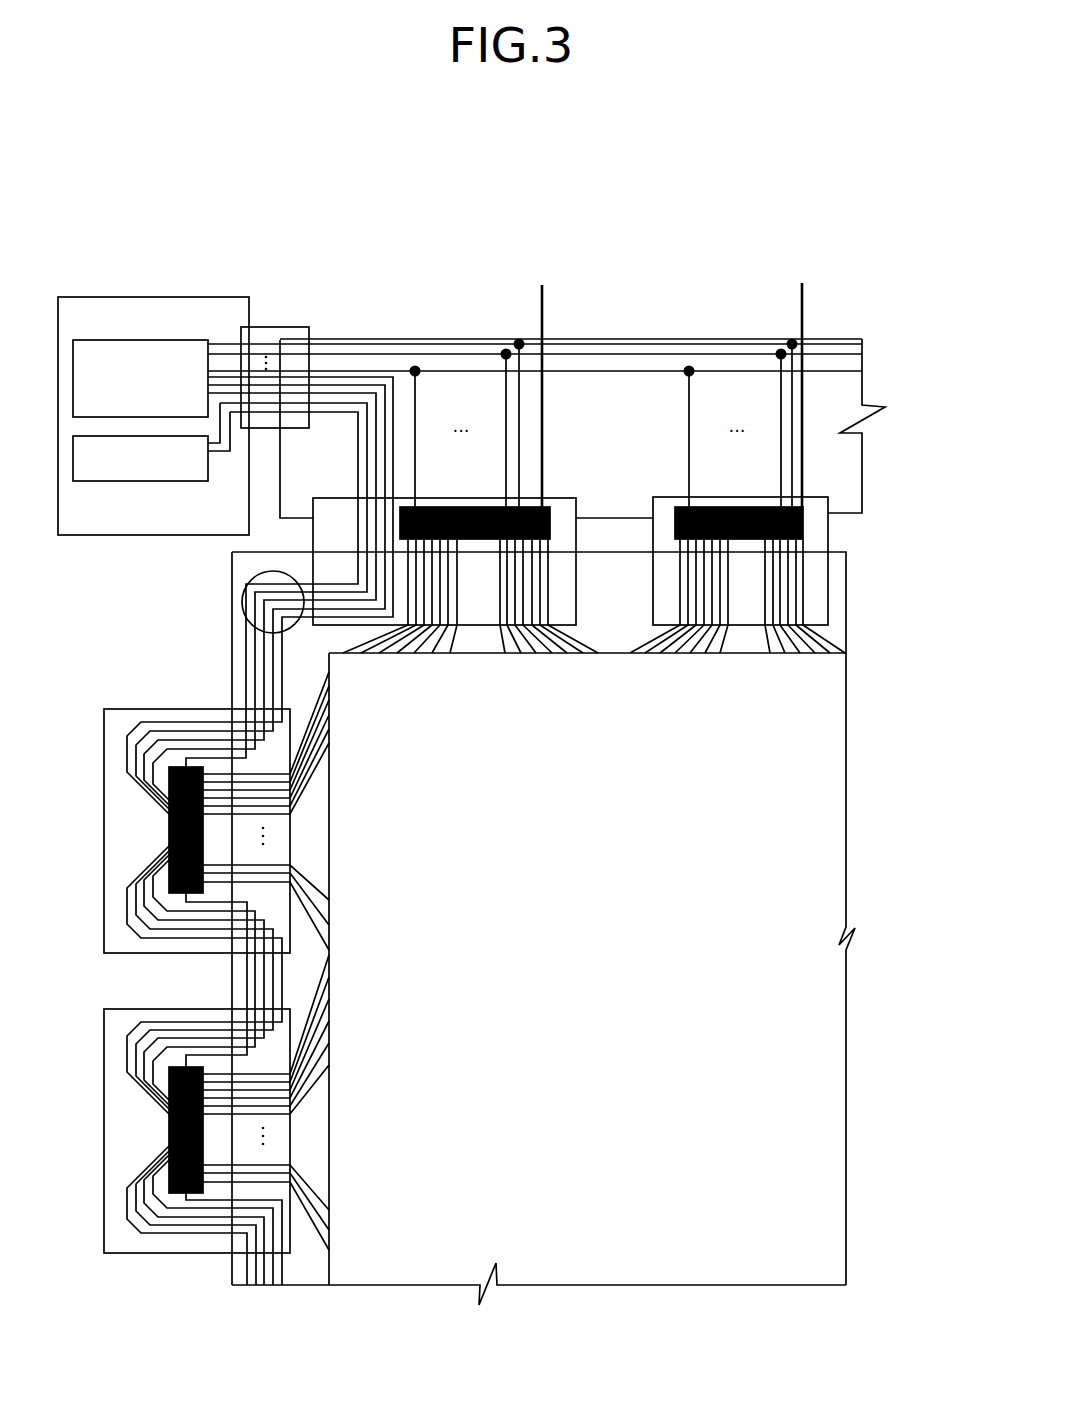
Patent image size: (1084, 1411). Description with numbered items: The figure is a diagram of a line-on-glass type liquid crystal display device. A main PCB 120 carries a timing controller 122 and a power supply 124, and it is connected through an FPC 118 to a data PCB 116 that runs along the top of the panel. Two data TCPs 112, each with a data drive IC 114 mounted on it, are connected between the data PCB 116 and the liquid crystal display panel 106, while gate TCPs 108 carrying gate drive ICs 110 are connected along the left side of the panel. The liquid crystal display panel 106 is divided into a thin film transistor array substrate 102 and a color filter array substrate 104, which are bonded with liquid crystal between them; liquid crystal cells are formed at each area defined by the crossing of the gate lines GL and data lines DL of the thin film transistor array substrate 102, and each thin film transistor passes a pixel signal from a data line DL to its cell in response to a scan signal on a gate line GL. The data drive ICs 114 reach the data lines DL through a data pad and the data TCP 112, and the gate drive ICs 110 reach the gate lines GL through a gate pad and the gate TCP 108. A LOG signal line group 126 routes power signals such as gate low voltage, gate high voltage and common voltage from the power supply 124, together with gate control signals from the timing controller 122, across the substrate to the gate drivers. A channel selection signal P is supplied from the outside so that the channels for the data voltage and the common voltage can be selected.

The thin film transistor array substrate 102 is at (837, 606).
The color filter array substrate 104 is at (835, 685).
The liquid crystal display panel 106 is at (912, 601).
The gate TCP 108 is at (184, 708).
The gate drive IC 110 is at (168, 828).
The data TCP 112 is at (862, 512).
The data drive IC 114 is at (803, 530).
The data PCB 116 is at (720, 338).
The FPC 118 is at (308, 326).
The main PCB 120 is at (200, 297).
The timing controller 122 is at (121, 391).
The power supply 124 is at (121, 471).
The LOG signal line group 126 is at (243, 598).
The channel selection signal P is at (610, 381).
The data lines DL is at (339, 664).
The gate lines GL is at (334, 1260).